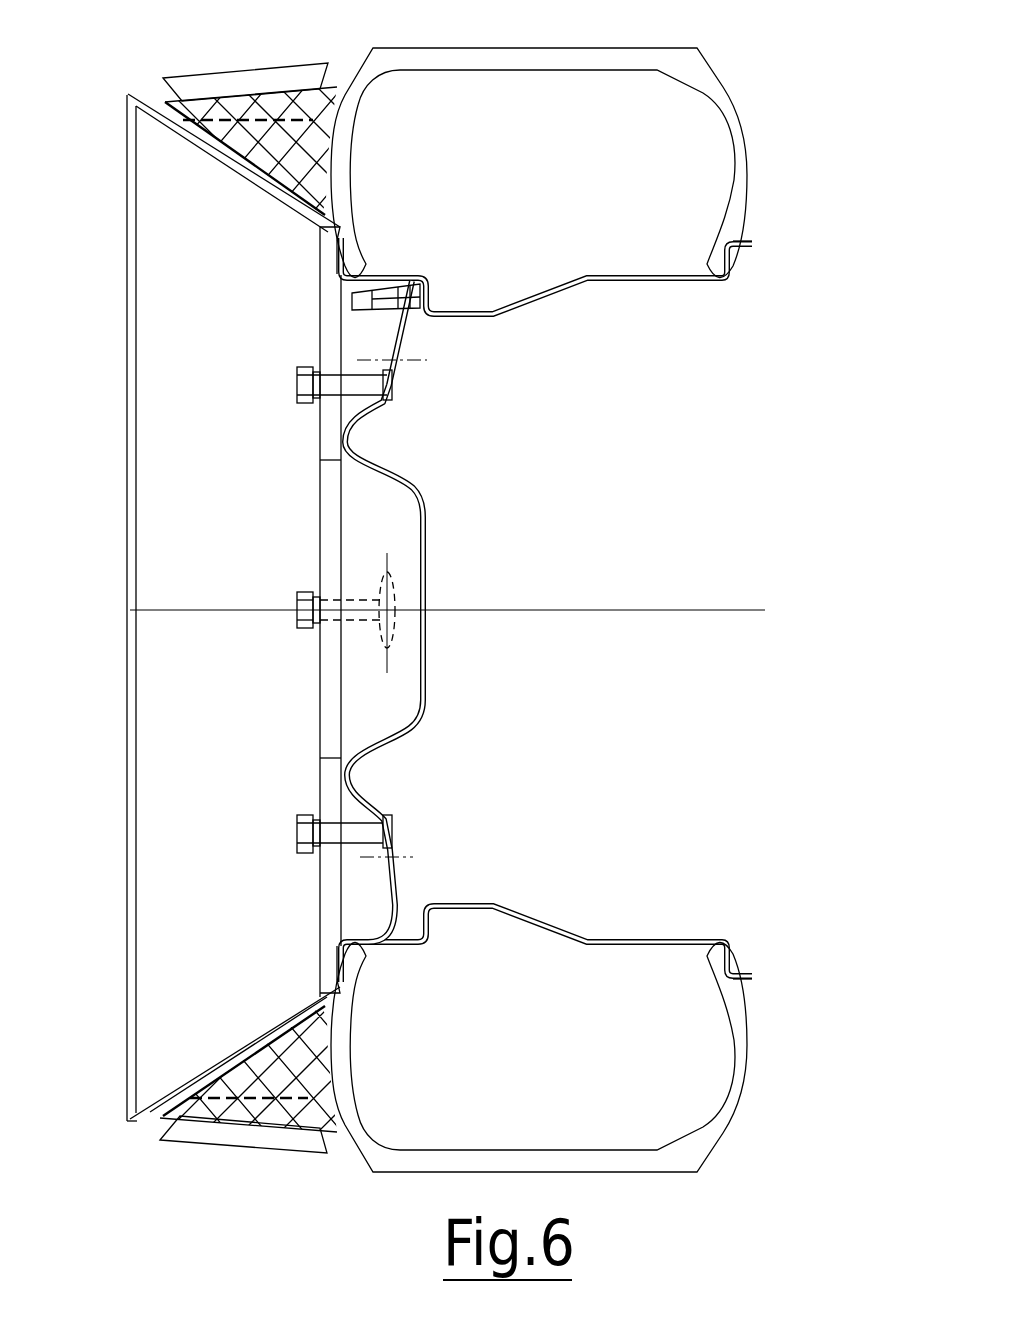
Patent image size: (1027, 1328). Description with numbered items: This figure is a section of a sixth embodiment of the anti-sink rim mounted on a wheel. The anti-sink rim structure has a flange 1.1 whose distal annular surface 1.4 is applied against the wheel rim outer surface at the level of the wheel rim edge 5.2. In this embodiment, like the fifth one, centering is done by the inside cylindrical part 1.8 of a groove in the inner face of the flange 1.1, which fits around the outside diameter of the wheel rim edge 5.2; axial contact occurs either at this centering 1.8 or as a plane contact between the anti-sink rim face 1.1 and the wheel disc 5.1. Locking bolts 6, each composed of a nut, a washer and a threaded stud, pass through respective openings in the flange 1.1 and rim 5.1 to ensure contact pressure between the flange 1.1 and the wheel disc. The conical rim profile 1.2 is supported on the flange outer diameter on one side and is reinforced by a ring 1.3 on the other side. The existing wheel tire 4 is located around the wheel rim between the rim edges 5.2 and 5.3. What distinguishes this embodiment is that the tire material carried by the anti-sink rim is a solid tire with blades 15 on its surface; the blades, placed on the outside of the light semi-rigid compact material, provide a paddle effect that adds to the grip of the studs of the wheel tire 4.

The flange 1.1 is at (332, 421).
The conical rim profile 1.2 is at (255, 180).
The ring 1.3 is at (131, 98).
The distal annular surface 1.4 is at (472, 312).
The inside cylindrical part 1.8 is at (335, 235).
The existing tire 4 is at (533, 53).
The wheel disc 5.1 is at (425, 518).
The wheel rim edge 5.2 is at (343, 256).
The rim edge 5.3 is at (730, 272).
The locking bolt 6 is at (337, 835).
The solid tire with blades 15 is at (273, 76).